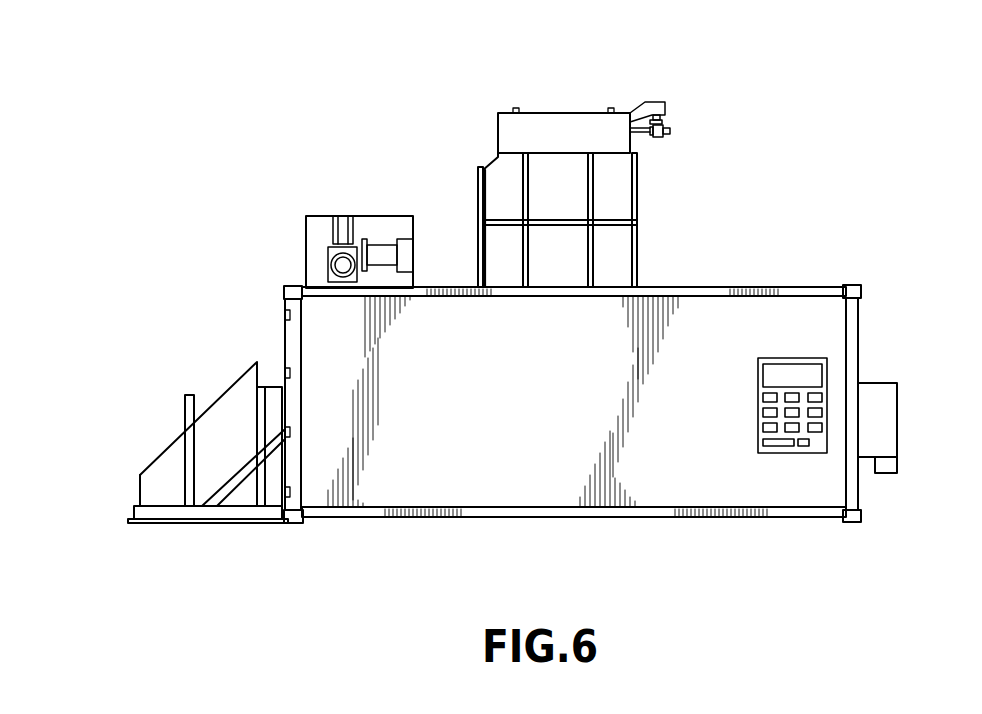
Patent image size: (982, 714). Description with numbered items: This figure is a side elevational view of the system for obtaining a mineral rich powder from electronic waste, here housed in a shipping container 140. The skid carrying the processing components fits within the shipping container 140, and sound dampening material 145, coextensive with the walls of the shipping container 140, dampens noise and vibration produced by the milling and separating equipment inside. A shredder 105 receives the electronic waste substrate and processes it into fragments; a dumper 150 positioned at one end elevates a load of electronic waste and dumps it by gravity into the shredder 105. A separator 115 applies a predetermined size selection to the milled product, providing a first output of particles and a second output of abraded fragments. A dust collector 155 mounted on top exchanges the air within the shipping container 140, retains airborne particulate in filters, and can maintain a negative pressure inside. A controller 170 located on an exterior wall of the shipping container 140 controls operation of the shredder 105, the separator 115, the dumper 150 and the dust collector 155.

The shredder 105 is at (306, 228).
The separator 115 is at (875, 385).
The shipping container 140 is at (780, 288).
The sound dampening material 145 is at (783, 333).
The dumper 150 is at (162, 453).
The dust collector 155 is at (550, 113).
The controller 170 is at (818, 442).